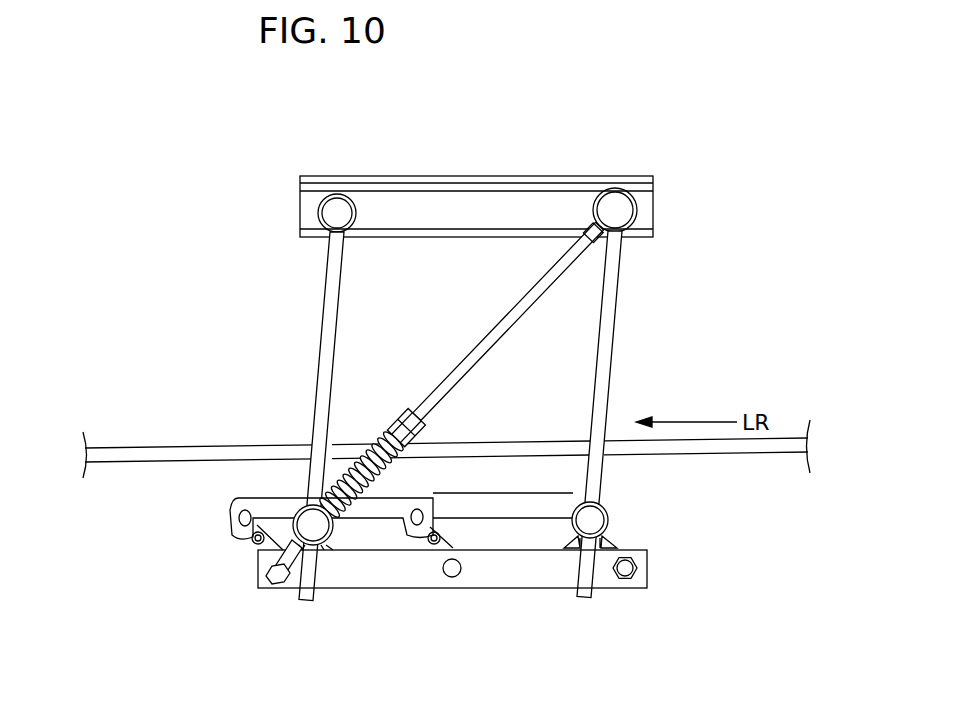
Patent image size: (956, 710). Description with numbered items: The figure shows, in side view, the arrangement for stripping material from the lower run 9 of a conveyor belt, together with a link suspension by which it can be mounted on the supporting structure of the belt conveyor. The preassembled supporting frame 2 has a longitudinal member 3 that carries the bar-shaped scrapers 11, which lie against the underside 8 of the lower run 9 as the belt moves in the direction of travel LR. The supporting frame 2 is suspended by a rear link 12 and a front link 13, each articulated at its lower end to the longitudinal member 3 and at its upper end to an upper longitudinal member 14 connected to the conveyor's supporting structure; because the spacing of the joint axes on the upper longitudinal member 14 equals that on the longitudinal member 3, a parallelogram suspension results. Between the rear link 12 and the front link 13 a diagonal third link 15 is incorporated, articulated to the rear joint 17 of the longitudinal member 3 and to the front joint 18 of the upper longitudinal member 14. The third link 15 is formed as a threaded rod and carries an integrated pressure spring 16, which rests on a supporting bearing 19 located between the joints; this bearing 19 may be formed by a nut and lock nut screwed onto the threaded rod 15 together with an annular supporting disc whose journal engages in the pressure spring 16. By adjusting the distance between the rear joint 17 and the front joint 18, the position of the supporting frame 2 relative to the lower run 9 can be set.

The supporting frame 2 is at (638, 580).
The longitudinal member 3 is at (502, 575).
The underside 8 is at (668, 453).
The lower run 9 is at (725, 442).
The bar-shaped scraper 11 is at (272, 498).
The rear link 12 is at (330, 322).
The front link 13 is at (607, 322).
The upper longitudinal member 14 is at (533, 200).
The third link 15 is at (490, 342).
The pressure spring 16 is at (373, 438).
The rear joint 17 is at (328, 547).
The front joint 18 is at (623, 208).
The supporting bearing 19 is at (387, 427).